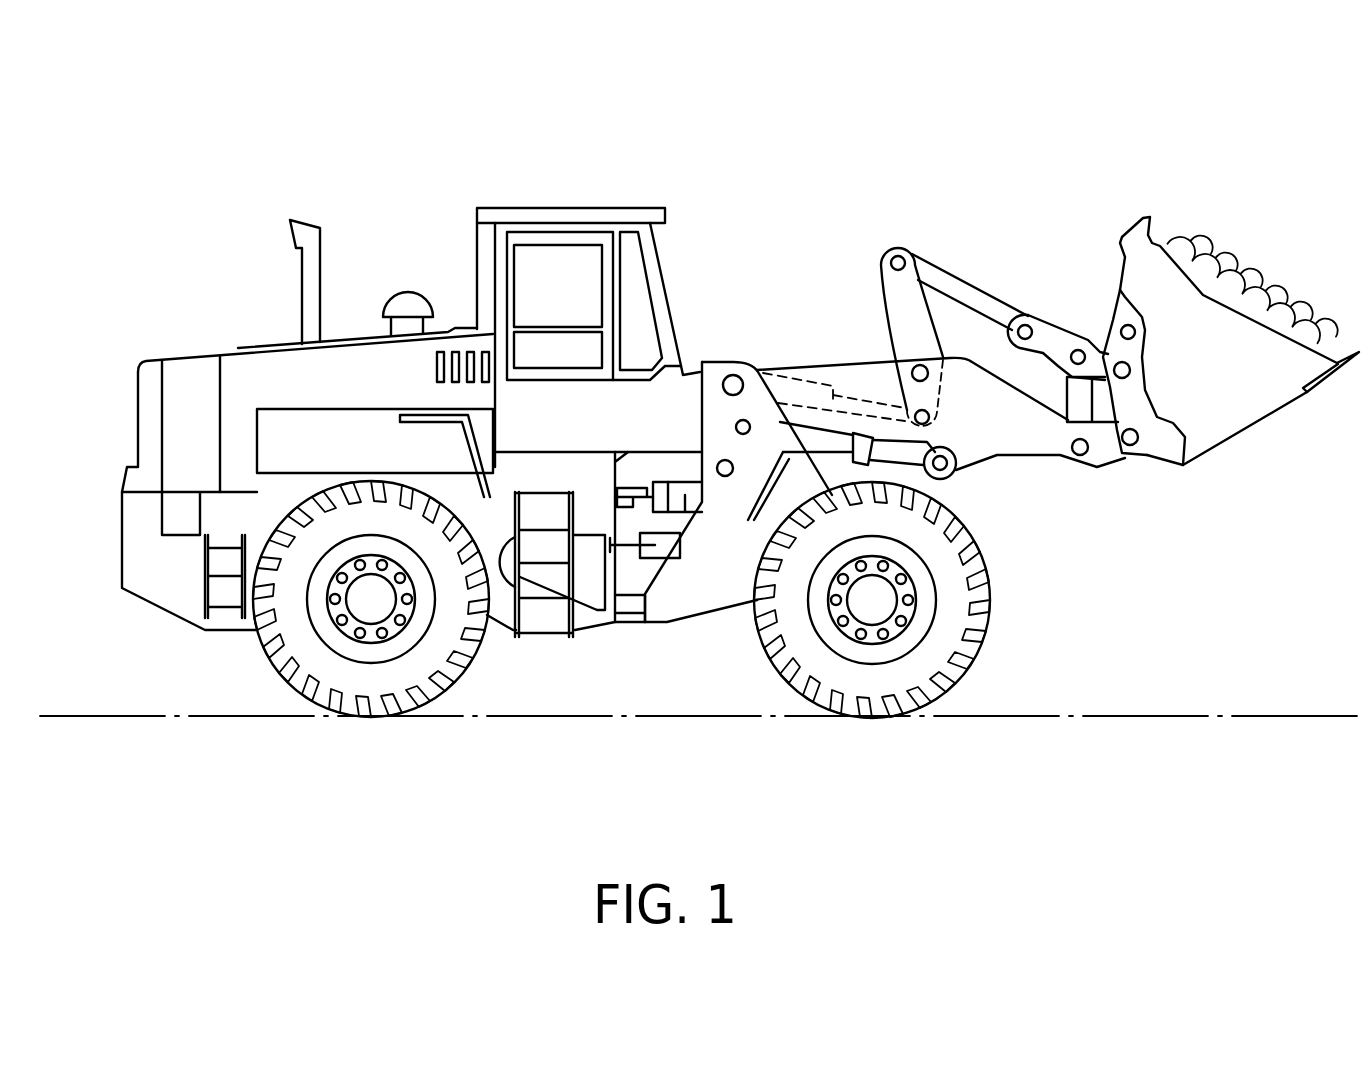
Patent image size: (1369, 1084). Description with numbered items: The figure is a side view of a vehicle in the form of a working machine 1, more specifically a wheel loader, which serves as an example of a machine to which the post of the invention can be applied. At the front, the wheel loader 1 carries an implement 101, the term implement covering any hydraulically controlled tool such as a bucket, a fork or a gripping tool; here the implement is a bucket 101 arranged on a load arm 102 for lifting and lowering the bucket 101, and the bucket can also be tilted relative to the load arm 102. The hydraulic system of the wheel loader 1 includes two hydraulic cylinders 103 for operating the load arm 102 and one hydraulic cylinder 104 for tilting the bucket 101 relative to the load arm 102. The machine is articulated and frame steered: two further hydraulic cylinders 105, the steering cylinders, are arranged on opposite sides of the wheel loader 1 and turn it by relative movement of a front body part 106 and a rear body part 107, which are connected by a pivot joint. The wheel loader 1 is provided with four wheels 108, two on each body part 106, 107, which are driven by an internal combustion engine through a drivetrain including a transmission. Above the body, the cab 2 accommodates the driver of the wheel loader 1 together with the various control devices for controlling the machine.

The working machine 1 is at (565, 156).
The cab 2 is at (673, 300).
The bucket 101 is at (1250, 423).
The load arm 102 is at (1100, 133).
The hydraulic cylinders 103 is at (905, 458).
The hydraulic cylinder 104 is at (853, 406).
The steering cylinders 105 is at (703, 490).
The front body part 106 is at (685, 593).
The rear body part 107 is at (187, 592).
The wheels 108 is at (383, 677).